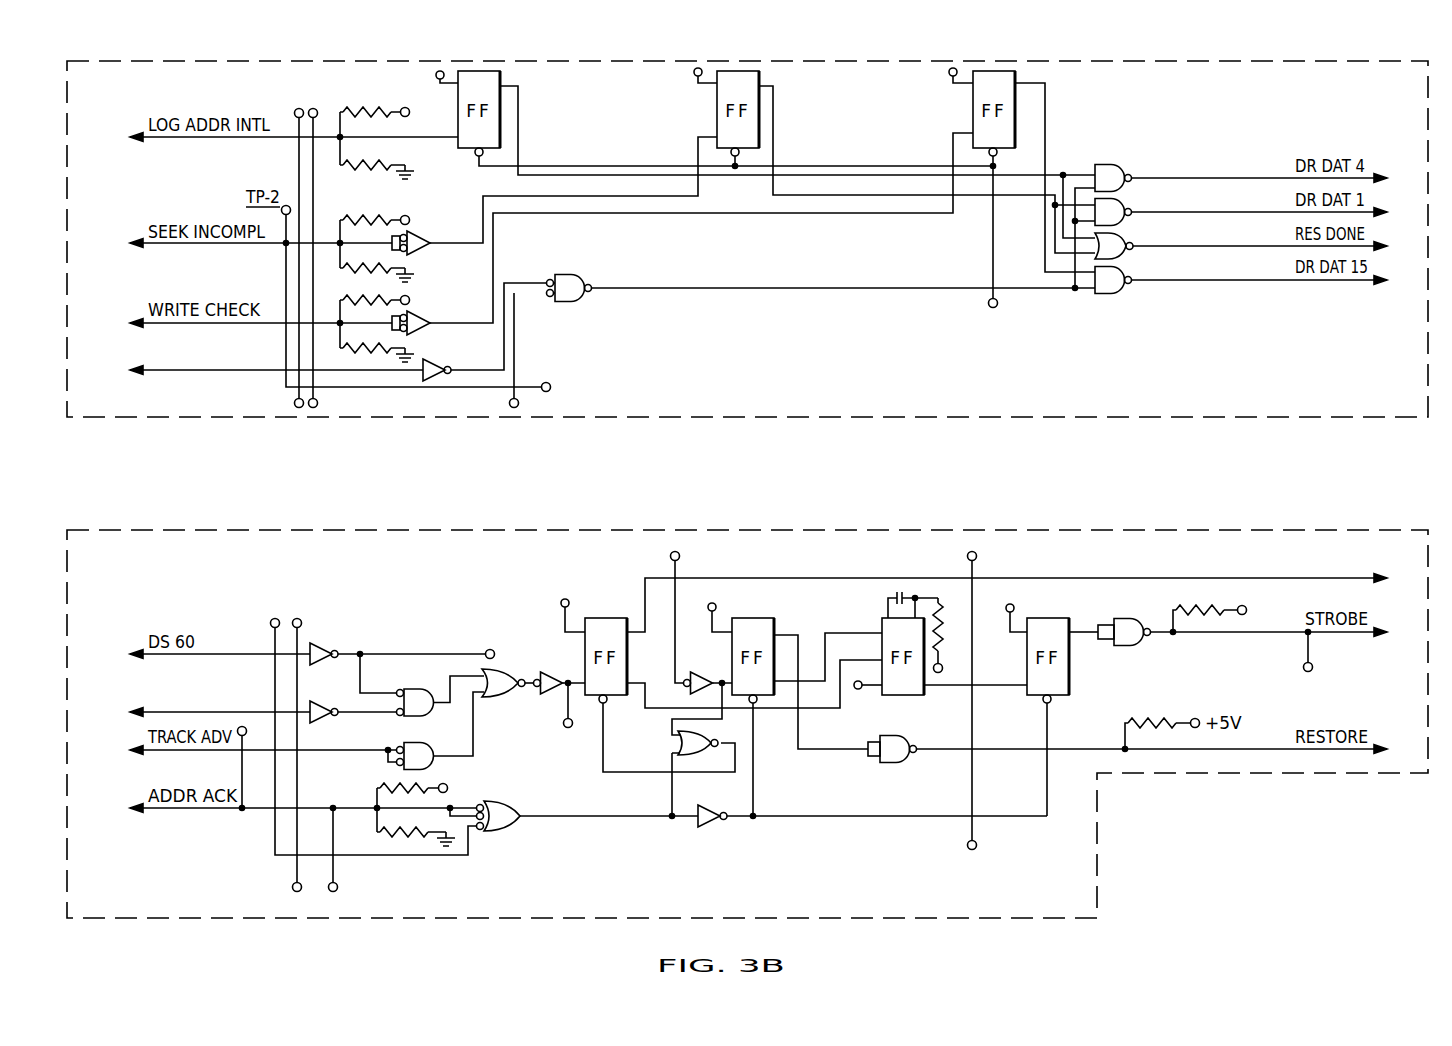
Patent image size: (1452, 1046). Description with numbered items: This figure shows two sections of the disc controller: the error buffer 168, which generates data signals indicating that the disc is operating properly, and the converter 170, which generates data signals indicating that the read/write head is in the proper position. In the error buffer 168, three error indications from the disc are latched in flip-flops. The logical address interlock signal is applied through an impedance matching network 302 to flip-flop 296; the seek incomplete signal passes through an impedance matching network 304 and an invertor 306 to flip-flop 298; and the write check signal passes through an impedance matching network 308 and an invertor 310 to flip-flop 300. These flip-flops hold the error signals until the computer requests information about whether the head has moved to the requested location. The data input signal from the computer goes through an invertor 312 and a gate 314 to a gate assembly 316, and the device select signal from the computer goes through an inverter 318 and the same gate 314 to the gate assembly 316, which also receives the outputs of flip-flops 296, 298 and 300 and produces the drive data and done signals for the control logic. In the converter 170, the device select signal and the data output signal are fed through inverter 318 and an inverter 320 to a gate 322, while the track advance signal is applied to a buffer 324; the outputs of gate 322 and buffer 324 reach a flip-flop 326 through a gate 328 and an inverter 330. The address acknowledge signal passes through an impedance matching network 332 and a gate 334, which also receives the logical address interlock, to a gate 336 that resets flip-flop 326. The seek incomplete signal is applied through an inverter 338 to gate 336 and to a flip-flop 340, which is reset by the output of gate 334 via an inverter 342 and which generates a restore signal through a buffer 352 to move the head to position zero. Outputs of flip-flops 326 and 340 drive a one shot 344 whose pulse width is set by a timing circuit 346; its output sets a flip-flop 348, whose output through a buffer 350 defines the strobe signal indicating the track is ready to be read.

The error buffer 168 is at (927, 418).
The converter 170 is at (1097, 528).
The flip-flop 296 is at (503, 73).
The flip-flop 298 is at (717, 108).
The flip-flop 300 is at (973, 108).
The impedance matching network 302 is at (331, 124).
The impedance matching network 304 is at (410, 197).
The invertor 306 is at (433, 230).
The impedance matching network 308 is at (421, 285).
The invertor 310 is at (433, 317).
The invertor 312 is at (445, 364).
The gate 314 is at (578, 275).
The gate assembly 316 is at (1131, 166).
The inverter 318 is at (324, 644).
The inverter 320 is at (313, 702).
The gate 322 is at (446, 688).
The buffer 324 is at (417, 743).
The flip-flop 326 is at (628, 661).
The gate 328 is at (498, 699).
The inverter 330 is at (554, 671).
The impedance matching network 332 is at (372, 799).
The gate 334 is at (501, 802).
The gate 336 is at (677, 744).
The inverter 338 is at (712, 671).
The flip-flop 340 is at (745, 618).
The inverter 342 is at (703, 828).
The one shot 344 is at (906, 699).
The timing circuit 346 is at (884, 600).
The flip-flop 348 is at (1071, 686).
The buffer 350 is at (1128, 618).
The buffer 352 is at (898, 763).